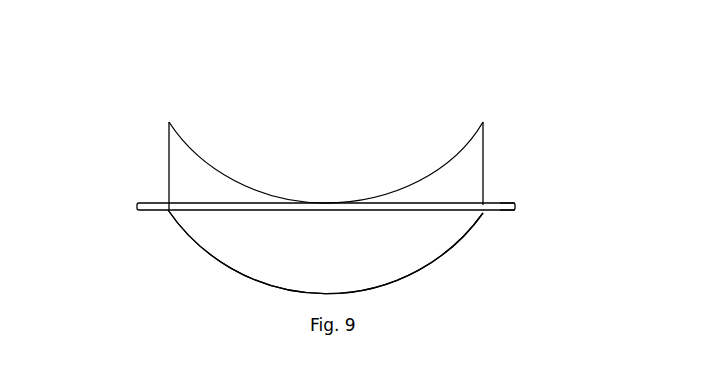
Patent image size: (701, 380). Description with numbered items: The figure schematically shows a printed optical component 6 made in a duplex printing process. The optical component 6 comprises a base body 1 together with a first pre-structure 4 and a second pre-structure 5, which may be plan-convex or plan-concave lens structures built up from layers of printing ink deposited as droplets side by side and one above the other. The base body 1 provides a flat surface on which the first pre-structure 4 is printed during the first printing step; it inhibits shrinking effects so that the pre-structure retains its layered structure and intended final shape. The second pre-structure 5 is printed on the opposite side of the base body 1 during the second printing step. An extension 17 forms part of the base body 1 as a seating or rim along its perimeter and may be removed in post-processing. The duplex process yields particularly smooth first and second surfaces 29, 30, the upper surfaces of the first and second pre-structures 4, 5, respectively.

The optical component 6 is at (350, 88).
The second surface 30 is at (217, 173).
The second pre-structure 5 is at (445, 172).
The base body 1 is at (208, 207).
The extension 17 is at (500, 205).
The first pre-structure 4 is at (247, 237).
The first surface 29 is at (218, 263).